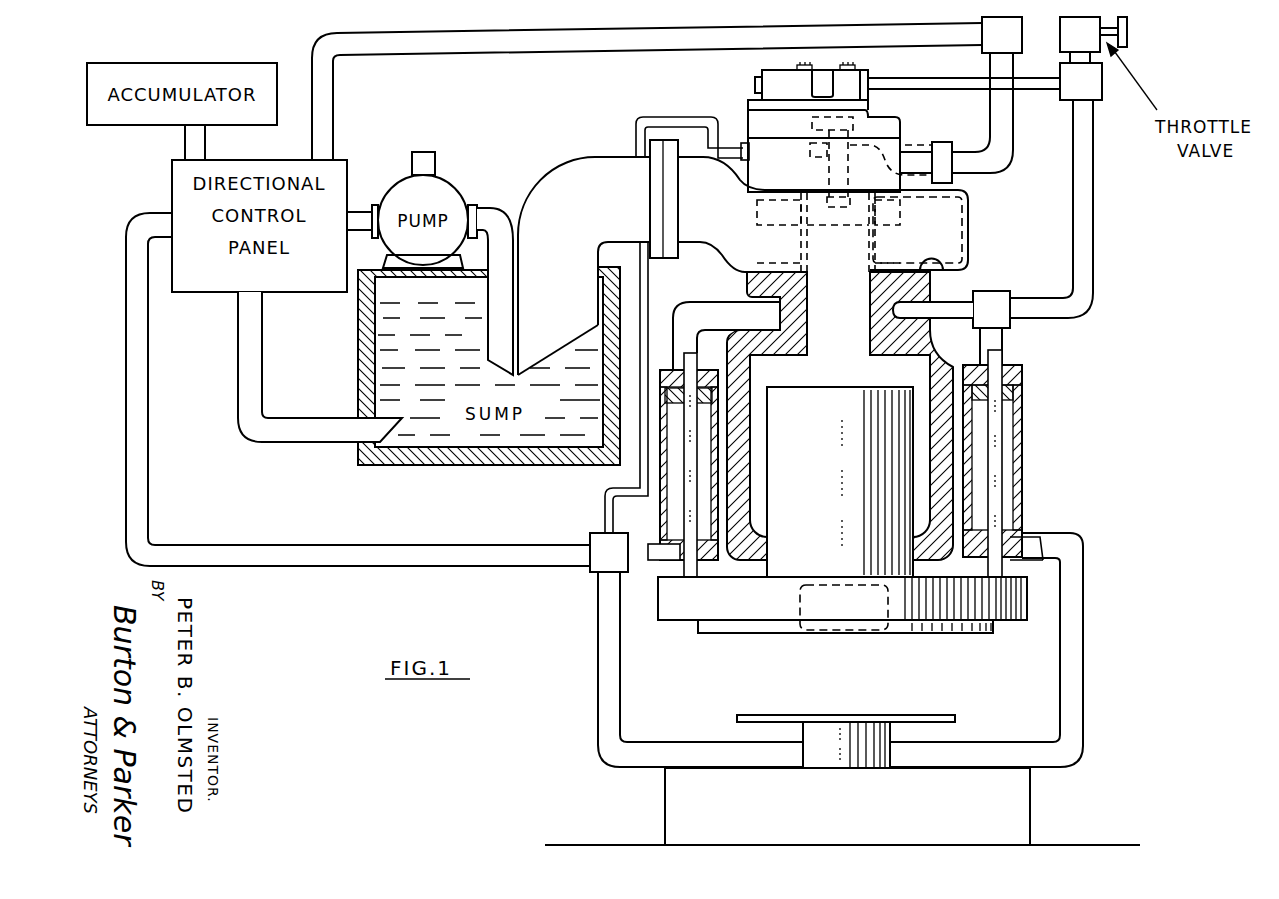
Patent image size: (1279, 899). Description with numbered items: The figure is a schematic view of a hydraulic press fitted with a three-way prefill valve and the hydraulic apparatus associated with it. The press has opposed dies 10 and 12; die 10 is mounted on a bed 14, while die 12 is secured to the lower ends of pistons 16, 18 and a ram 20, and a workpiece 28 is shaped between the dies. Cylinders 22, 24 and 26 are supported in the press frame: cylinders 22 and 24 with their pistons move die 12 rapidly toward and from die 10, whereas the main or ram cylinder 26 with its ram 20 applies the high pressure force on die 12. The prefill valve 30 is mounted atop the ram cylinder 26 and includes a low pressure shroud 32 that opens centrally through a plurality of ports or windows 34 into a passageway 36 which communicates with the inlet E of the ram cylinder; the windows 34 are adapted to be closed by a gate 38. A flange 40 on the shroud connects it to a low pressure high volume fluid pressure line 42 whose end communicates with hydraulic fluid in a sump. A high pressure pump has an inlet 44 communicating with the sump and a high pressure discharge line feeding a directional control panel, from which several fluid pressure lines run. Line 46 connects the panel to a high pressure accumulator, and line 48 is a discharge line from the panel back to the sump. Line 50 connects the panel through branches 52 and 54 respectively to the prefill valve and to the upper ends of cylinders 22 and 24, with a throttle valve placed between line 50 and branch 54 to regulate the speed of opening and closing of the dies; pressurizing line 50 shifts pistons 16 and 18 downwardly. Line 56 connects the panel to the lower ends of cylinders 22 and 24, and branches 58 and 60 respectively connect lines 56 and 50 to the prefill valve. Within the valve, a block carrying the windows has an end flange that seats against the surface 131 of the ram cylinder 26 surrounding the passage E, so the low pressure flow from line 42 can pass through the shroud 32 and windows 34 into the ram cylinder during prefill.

The die 10 is at (830, 753).
The die 12 is at (1003, 617).
The bed 14 is at (1013, 820).
The piston 16 is at (677, 573).
The piston 18 is at (997, 523).
The ram 20 is at (848, 504).
The cylinder 22 is at (663, 470).
The cylinder 24 is at (1022, 445).
The ram cylinder 26 is at (942, 353).
The workpiece 28 is at (907, 715).
The prefill valve 30 is at (934, 244).
The low pressure shroud 32 is at (968, 262).
The ports or windows 34 is at (872, 240).
The passageway 36 is at (825, 270).
The gate 38 is at (800, 233).
The flange 40 is at (660, 198).
The low pressure high volume fluid pressure line 42 is at (593, 167).
The inlet 44 is at (497, 289).
The line 46 is at (190, 140).
The discharge line 48 is at (315, 432).
The line 50 is at (575, 40).
The branch 52 is at (1002, 102).
The branch 54 is at (1094, 212).
The line 56 is at (355, 555).
The branch 58 is at (605, 515).
The branch 60 is at (908, 87).
The surface 131 is at (950, 268).
The inlet E is at (808, 328).